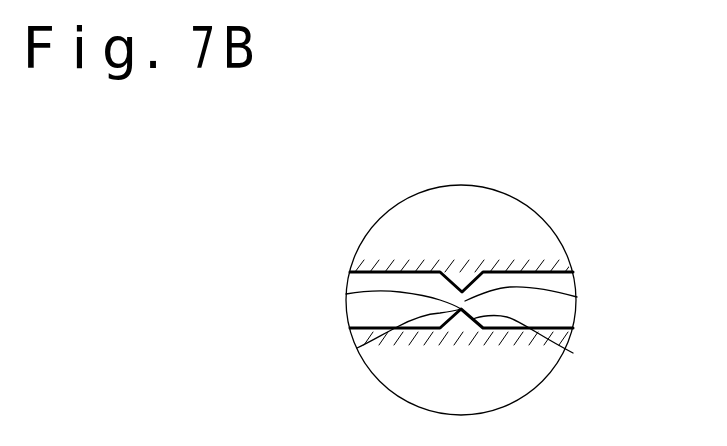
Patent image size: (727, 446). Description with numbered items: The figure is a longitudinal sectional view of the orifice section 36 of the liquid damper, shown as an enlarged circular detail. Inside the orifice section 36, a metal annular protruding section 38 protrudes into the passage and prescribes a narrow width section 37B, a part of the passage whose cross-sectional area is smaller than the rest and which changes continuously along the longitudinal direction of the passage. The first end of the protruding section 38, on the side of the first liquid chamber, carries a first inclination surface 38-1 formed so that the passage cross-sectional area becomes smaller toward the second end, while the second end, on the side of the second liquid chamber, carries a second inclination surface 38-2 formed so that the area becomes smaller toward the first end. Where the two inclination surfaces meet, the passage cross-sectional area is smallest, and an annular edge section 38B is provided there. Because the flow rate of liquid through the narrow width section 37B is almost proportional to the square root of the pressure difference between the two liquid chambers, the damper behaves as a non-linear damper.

The orifice section 36 is at (530, 204).
The narrow width section 37B is at (577, 297).
The annular protruding section 38 is at (462, 320).
The first inclination surface 38-1 is at (573, 353).
The second inclination surface 38-2 is at (357, 348).
The annular edge section 38B is at (346, 294).